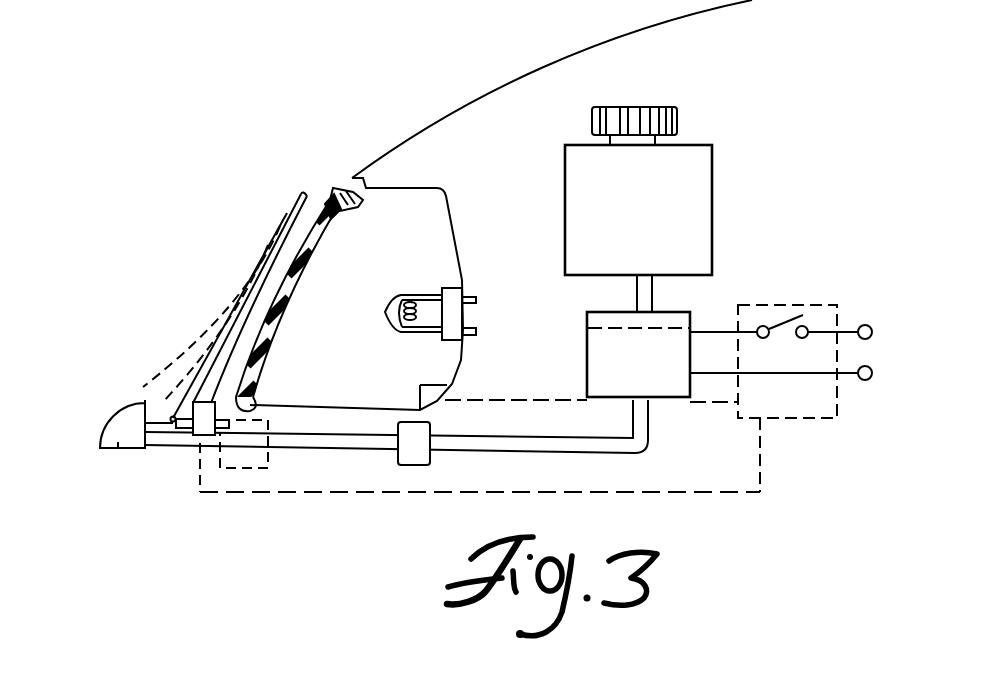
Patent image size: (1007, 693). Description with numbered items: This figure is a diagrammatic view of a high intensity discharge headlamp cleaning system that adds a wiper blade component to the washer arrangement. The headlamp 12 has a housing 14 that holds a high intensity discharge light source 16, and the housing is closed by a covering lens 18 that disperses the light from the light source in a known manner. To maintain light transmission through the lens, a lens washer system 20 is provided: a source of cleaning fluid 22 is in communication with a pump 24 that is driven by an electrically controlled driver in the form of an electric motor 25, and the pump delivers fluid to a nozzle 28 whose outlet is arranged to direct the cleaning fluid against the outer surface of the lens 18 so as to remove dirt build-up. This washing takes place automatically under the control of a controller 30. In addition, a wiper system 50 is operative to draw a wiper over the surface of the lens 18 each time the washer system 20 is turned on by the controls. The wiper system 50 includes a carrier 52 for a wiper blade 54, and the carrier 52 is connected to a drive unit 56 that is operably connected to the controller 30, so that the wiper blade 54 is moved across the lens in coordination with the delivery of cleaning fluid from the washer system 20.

The headlamp 12 is at (414, 172).
The housing 14 is at (443, 195).
The high intensity discharge light source 16 is at (385, 312).
The covering lens 18 is at (337, 190).
The lens washer system 20 is at (312, 457).
The source of cleaning fluid 22 is at (698, 178).
The pump 24 is at (597, 372).
The electric motor 25 is at (593, 318).
The nozzle 28 is at (114, 444).
The controller 30 is at (781, 294).
The wiper system 50 is at (273, 213).
The carrier 52 is at (197, 432).
The wiper blade 54 is at (240, 312).
The drive unit 56 is at (236, 468).